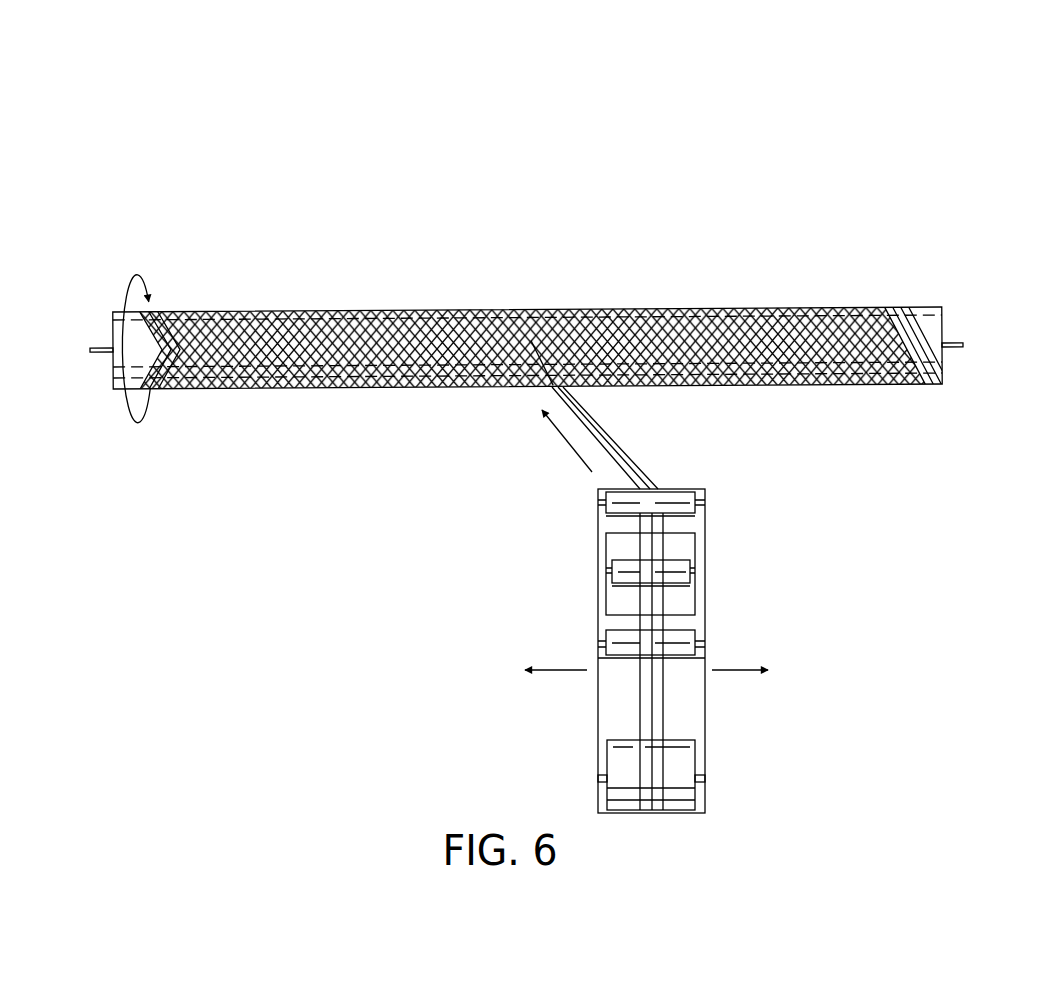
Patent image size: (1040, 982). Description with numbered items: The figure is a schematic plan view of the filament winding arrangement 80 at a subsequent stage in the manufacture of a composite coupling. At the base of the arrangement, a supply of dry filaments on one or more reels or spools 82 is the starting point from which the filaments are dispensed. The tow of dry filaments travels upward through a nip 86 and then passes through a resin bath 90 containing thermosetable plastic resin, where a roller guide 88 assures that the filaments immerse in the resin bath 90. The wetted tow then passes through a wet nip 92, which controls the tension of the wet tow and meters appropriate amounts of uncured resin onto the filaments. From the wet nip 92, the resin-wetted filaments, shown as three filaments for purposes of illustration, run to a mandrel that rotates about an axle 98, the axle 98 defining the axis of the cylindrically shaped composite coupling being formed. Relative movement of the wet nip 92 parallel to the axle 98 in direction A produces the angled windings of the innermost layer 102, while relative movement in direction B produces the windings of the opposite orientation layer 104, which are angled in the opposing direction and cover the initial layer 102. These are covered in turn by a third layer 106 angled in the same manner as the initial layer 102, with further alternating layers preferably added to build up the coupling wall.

The filament winding arrangement 80 is at (252, 140).
The reels or spools 82 is at (680, 763).
The nip 86 is at (677, 638).
The roller guide 88 is at (672, 575).
The resin bath 90 is at (680, 548).
The wet nip 92 is at (675, 490).
The axle 98 is at (961, 346).
The innermost layer 102 is at (922, 374).
The opposite orientation layer 104 is at (150, 386).
The third layer 106 is at (528, 309).